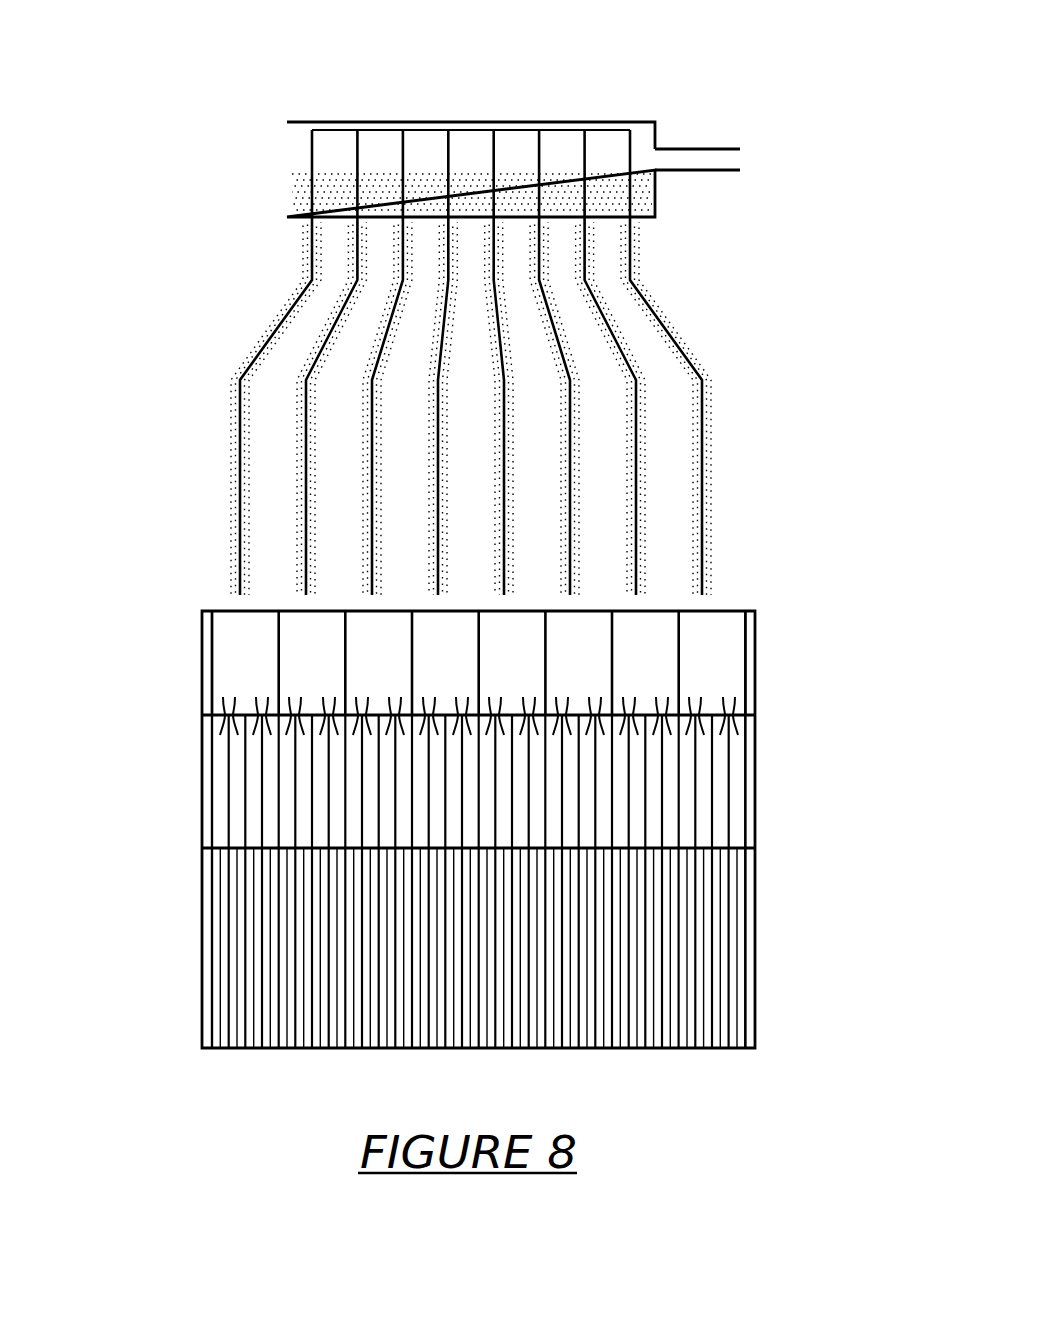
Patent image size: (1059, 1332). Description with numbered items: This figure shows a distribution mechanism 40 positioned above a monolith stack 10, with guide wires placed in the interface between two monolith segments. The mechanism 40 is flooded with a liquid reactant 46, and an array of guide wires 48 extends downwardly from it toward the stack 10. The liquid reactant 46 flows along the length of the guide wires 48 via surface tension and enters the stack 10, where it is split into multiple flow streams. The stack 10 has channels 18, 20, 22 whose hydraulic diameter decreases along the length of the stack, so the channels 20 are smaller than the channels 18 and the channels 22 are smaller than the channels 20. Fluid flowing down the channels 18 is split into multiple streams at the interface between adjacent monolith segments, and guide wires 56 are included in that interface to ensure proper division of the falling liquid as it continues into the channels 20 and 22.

The monolith stack 10 is at (767, 611).
The channels 18 is at (303, 690).
The channels 20 is at (253, 823).
The channels 22 is at (215, 933).
The mechanism 40 is at (458, 102).
The liquid reactant 46 is at (648, 212).
The guide wires 48 is at (307, 533).
The guide wires 56 is at (220, 706).